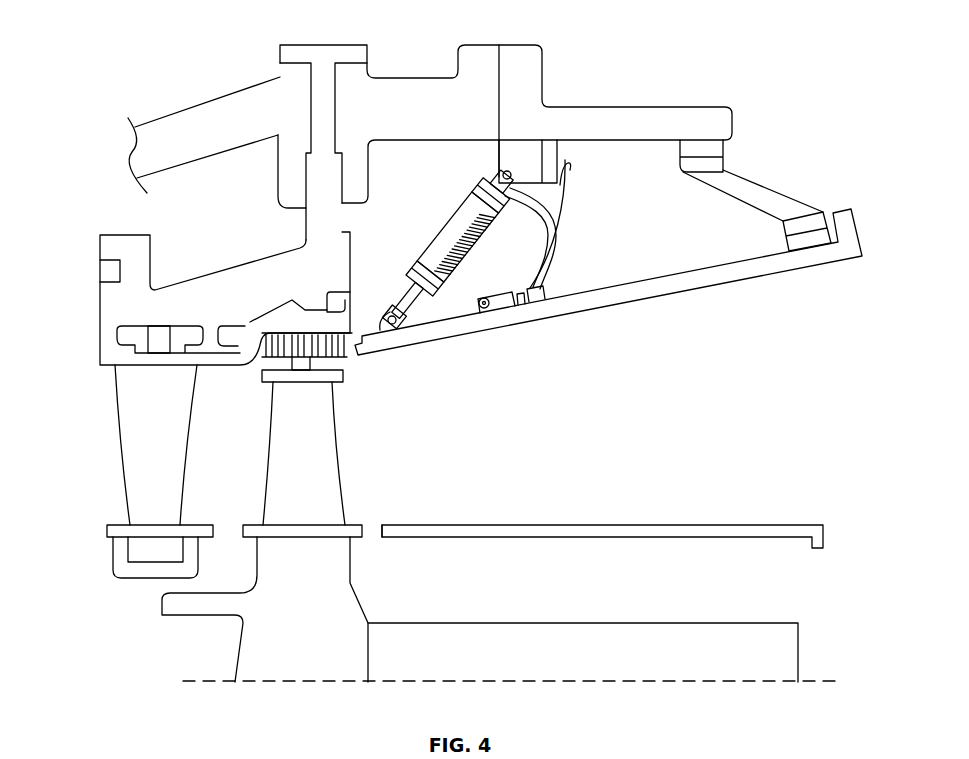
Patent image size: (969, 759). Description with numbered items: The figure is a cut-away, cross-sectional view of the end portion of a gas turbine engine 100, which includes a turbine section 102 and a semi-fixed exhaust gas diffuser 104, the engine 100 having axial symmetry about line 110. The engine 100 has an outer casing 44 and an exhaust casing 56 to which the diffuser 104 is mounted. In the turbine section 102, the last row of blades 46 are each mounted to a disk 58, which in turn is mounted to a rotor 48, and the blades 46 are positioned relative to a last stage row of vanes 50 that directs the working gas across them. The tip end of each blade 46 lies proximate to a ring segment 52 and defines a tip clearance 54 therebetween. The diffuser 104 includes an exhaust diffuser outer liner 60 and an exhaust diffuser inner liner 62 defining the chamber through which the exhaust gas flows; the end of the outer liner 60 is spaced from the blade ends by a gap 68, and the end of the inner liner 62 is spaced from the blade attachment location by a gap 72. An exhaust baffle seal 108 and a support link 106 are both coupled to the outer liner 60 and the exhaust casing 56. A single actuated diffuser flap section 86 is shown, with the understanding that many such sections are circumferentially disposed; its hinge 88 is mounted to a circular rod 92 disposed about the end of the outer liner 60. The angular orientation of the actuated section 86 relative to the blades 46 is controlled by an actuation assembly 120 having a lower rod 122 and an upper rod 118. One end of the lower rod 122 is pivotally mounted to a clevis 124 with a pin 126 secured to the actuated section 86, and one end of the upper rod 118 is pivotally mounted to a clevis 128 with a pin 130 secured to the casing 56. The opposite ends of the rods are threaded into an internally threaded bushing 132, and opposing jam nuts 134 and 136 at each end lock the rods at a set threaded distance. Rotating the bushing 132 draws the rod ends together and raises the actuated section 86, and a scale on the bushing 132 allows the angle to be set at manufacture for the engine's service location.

The gas turbine engine 100 is at (678, 31).
The outer casing 44 is at (375, 103).
The last row of blades 46 is at (290, 463).
The rotor 48 is at (398, 635).
The last stage row of vanes 50 is at (145, 455).
The ring segment 52 is at (297, 318).
The tip clearance 54 is at (275, 360).
The exhaust casing 56 is at (640, 124).
The disk 58 is at (255, 663).
The exhaust diffuser outer liner 60 is at (600, 307).
The exhaust diffuser inner liner 62 is at (603, 524).
The gap 68 is at (355, 365).
The gap 72 is at (373, 530).
The actuated diffuser flap section 86 is at (496, 312).
The hinge 88 is at (432, 260).
The circular rod 92 is at (488, 300).
The turbine section 102 is at (95, 272).
The exhaust gas diffuser 104 is at (612, 247).
The support link 106 is at (775, 188).
The exhaust baffle seal 108 is at (570, 164).
The line of axial symmetry 110 is at (630, 682).
The upper rod 118 is at (553, 215).
The actuation assembly 120 is at (436, 235).
The lower rod 122 is at (412, 300).
The clevis 124 is at (385, 330).
The pin 126 is at (389, 314).
The clevis 128 is at (525, 160).
The pin 130 is at (505, 172).
The internally threaded bushing 132 is at (447, 224).
The jam nut 134 is at (480, 192).
The jam nut 136 is at (545, 226).